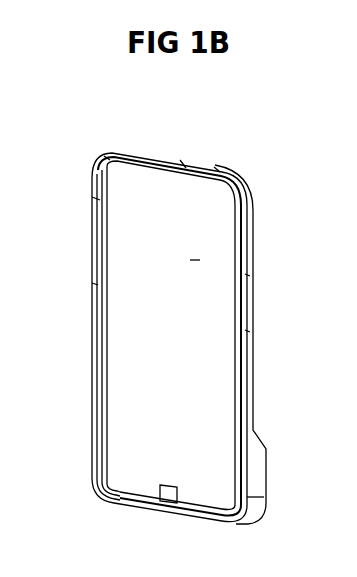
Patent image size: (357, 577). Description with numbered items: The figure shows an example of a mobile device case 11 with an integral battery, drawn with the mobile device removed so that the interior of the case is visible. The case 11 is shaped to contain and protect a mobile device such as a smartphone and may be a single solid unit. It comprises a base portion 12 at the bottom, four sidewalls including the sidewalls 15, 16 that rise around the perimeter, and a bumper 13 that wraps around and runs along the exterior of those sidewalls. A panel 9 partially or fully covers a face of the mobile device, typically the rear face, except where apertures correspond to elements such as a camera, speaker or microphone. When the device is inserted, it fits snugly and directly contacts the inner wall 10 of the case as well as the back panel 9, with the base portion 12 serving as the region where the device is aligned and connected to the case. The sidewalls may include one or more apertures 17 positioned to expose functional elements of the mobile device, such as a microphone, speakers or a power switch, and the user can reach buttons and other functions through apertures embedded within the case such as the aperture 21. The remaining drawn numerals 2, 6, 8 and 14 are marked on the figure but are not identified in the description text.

The protective case 2 is at (268, 448).
The inner surface 6 is at (190, 260).
The top corner 8 is at (104, 156).
The panel 9 is at (92, 197).
The inner wall 10 is at (177, 485).
The mobile device case 11 is at (180, 160).
The base portion 12 is at (246, 331).
The bumper 13 is at (192, 511).
The left side wall 14 is at (93, 332).
The sidewall 15 is at (144, 155).
The sidewall 16 is at (246, 275).
The aperture 17 is at (92, 283).
The aperture 21 is at (214, 167).